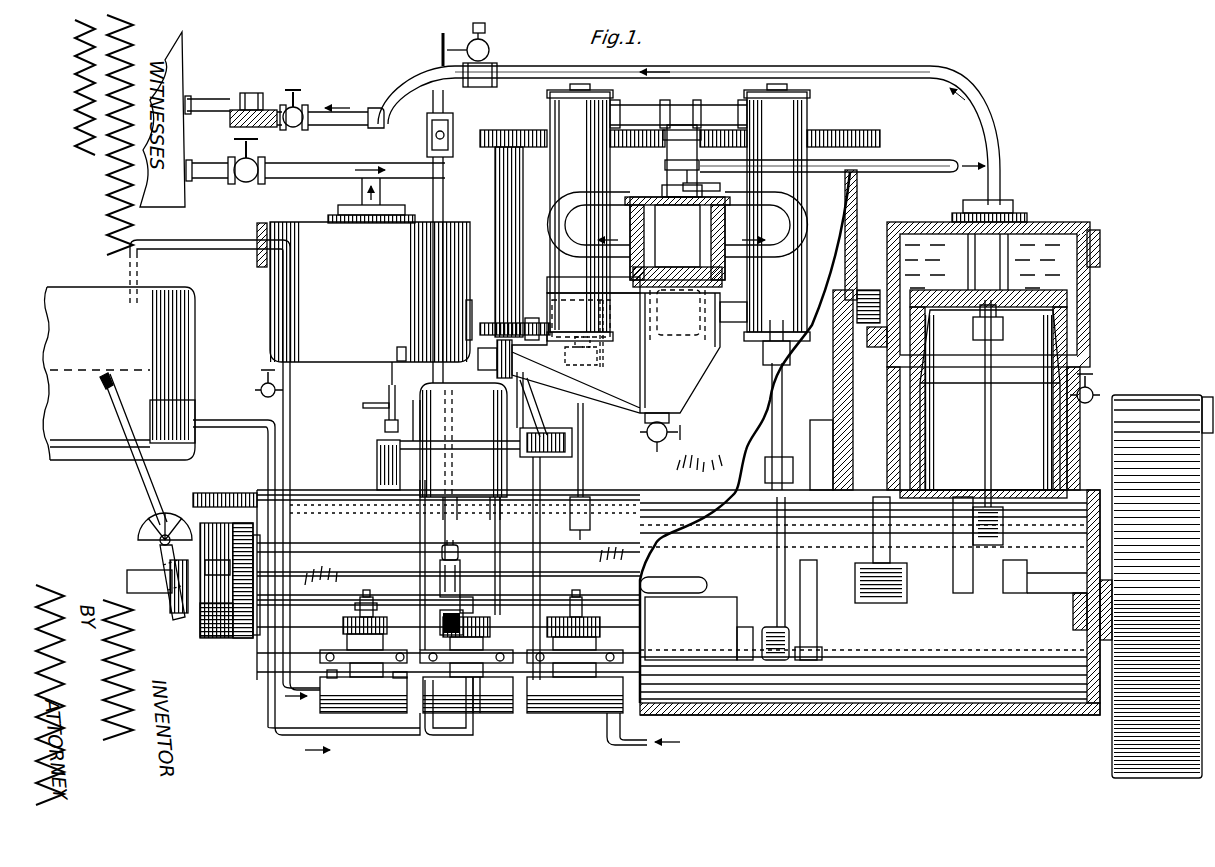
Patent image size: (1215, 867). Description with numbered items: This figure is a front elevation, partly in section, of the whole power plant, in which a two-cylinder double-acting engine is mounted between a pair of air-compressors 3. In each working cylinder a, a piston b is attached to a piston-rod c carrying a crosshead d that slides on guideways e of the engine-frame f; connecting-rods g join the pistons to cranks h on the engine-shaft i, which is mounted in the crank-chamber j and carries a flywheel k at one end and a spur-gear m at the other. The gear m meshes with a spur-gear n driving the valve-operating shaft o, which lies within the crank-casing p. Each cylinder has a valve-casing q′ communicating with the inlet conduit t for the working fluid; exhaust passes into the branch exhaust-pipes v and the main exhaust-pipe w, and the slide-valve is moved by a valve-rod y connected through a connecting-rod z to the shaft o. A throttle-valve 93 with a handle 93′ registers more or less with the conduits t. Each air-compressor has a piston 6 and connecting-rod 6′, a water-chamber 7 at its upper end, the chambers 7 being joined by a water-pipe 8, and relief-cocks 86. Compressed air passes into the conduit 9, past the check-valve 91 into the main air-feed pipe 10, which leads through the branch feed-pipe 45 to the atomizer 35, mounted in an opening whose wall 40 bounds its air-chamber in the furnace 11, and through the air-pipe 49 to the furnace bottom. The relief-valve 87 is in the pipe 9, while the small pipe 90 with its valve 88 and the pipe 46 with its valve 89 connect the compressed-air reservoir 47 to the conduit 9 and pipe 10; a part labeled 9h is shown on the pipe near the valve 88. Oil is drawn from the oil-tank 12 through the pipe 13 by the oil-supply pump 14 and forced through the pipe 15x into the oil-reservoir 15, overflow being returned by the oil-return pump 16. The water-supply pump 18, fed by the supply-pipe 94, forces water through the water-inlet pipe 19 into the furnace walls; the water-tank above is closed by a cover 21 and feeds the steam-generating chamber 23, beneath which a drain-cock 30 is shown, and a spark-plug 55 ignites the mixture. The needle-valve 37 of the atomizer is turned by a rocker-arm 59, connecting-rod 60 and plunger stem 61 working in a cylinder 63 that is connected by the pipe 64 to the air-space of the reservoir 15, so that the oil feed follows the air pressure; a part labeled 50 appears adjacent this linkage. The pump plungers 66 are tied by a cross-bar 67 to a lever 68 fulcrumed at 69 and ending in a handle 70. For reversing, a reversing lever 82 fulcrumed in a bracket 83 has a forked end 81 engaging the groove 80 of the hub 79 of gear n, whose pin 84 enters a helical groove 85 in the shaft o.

The air-compressor 3 is at (1122, 318).
The piston 6 is at (1050, 352).
The connecting-rod 6′ is at (992, 420).
The water-chamber 7 is at (1060, 240).
The water-pipe 8 is at (875, 350).
The conduit 9 is at (857, 70).
The pipe coupling 9h is at (250, 98).
The main compressed-air feed-pipe 10 is at (446, 200).
The furnace 11 is at (614, 335).
The oil-tank 12 is at (119, 356).
The pipe 13 is at (222, 424).
The oil-supply pump 14 is at (468, 680).
The oil-reservoir 15 is at (390, 466).
The pipe 15x is at (500, 522).
The oil-return pump 16 is at (383, 680).
The water-supply pump 18 is at (585, 685).
The water-inlet pipe 19 is at (545, 560).
The cover 21 is at (549, 286).
The steam-generating chamber 23 is at (616, 353).
The drain-cock 30 is at (658, 444).
The atomizer 35 is at (512, 356).
The needle-valve 37 is at (470, 322).
The wall of opening 40 is at (525, 322).
The branch feed-pipe 45 is at (524, 384).
The air-pipe 46 is at (317, 163).
The compressed-air reservoir 47 is at (162, 119).
The air-pipe 49 is at (541, 410).
The valve 50 is at (555, 458).
The spark-plug 55 is at (558, 315).
The rocker-arm 59 is at (398, 348).
The connecting-rod 60 is at (390, 396).
The plunger stem 61 is at (385, 425).
The cylinder 63 is at (377, 445).
The pipe 64 is at (363, 405).
The pump plunger 66 is at (364, 597).
The cross-bar 67 is at (378, 600).
The lever 68 is at (440, 578).
The fulcrum 69 is at (455, 565).
The handle 70 is at (485, 633).
The hub 79 is at (220, 636).
The circumferential groove 80 is at (180, 613).
The forked end 81 is at (160, 548).
The reversing lever 82 is at (160, 470).
The bracket 83 is at (225, 492).
The pin 84 is at (235, 560).
The helical groove 85 is at (207, 557).
The relief-cock 86 is at (258, 382).
The relief-valve 87 is at (490, 48).
The valve 88 is at (305, 102).
The valve 89 is at (250, 178).
The small air-pipe 90 is at (370, 106).
The check-valve 91 is at (455, 128).
The throttle-valve 93 is at (677, 268).
The handle 93′ is at (720, 188).
The supply-pipe 94 is at (640, 746).
The working cylinder a is at (512, 168).
The piston b is at (853, 282).
The piston-rod c is at (784, 441).
The crosshead d is at (795, 467).
The guideways e is at (835, 428).
The engine-frame f is at (856, 396).
The connecting-rod g is at (788, 546).
The crank h is at (737, 634).
The engine-shaft i is at (903, 600).
The crank-chamber j is at (1000, 600).
The flywheel k is at (1156, 586).
The spur-gear m is at (240, 640).
The spur-gear n is at (256, 638).
The valve-operating shaft o is at (692, 577).
The crank-casing p is at (850, 716).
The valve-casing q′ is at (678, 212).
The inlet conduit t is at (555, 216).
The branch exhaust-pipe v is at (735, 105).
The main exhaust-pipe w is at (890, 158).
The valve-rod y is at (772, 352).
The connecting-rod z is at (591, 516).